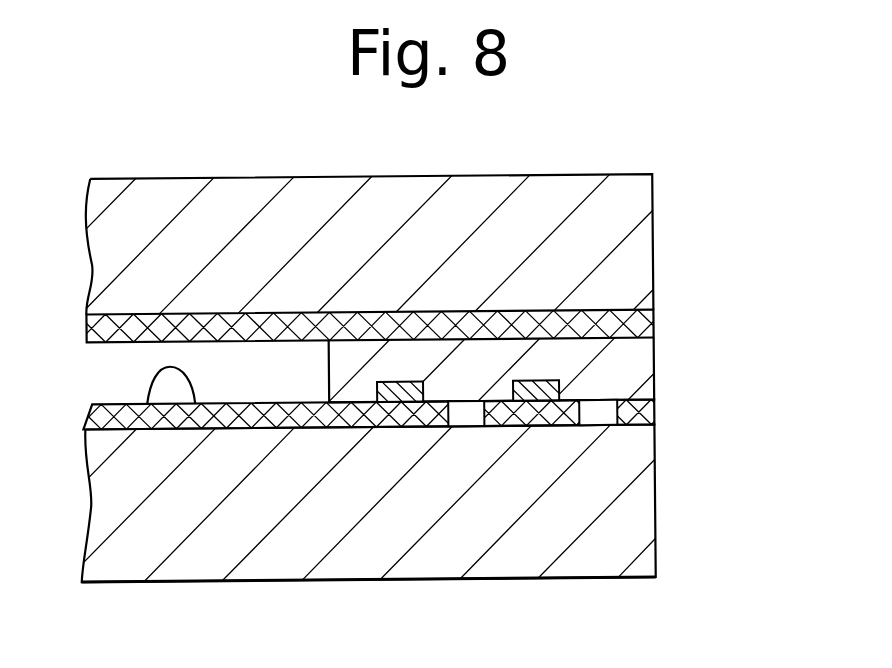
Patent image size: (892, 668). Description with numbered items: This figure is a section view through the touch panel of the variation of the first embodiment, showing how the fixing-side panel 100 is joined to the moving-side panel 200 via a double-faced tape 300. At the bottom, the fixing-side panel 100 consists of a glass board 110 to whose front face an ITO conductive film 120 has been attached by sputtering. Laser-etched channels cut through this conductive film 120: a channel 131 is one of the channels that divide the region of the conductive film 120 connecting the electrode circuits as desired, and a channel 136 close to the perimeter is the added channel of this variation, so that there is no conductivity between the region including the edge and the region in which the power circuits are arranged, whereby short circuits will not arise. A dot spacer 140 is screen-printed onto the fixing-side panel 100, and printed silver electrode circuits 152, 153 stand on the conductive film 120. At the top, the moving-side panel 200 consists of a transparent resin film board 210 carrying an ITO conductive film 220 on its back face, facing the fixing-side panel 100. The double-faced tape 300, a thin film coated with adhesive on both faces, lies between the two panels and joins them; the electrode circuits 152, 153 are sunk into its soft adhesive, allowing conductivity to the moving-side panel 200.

The fixing-side panel 100 is at (453, 491).
The glass board 110 is at (615, 538).
The ITO conductive film 120 is at (633, 410).
The channel 131 is at (465, 412).
The channel close to the perimeter 136 is at (597, 412).
The dot spacer 140 is at (157, 382).
The silver electrode circuit 152 is at (398, 382).
The silver electrode circuit 153 is at (540, 382).
The moving-side panel 200 is at (464, 258).
The transparent resin film board 210 is at (622, 220).
The ITO conductive film 220 is at (628, 323).
The double-faced tape 300 is at (613, 368).